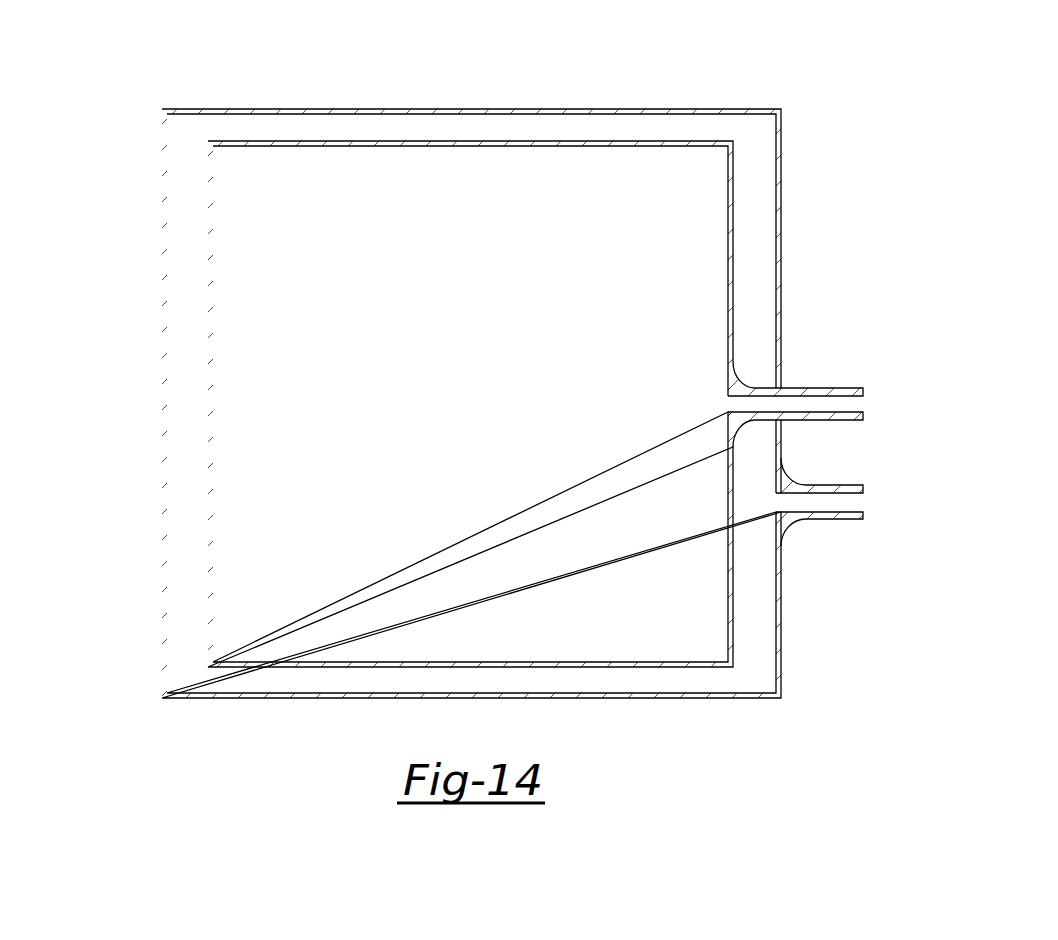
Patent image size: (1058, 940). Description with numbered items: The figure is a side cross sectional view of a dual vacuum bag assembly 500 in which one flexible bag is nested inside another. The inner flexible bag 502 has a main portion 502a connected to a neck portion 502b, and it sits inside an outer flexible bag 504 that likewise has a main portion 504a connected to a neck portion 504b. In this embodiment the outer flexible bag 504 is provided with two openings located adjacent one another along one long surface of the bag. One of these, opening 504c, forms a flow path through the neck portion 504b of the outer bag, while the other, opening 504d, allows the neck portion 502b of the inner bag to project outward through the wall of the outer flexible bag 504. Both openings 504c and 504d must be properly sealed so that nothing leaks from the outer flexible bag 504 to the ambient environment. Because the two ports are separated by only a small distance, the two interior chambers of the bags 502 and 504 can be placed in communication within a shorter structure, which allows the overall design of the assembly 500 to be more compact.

The dual vacuum bag assembly 500 is at (746, 58).
The inner flexible bag 502 is at (200, 294).
The main portion of inner flexible bag 502a is at (362, 168).
The neck portion of inner flexible bag 502b is at (836, 392).
The outer flexible bag 504 is at (155, 210).
The main portion of outer flexible bag 504a is at (631, 130).
The neck portion of outer flexible bag 504b is at (830, 515).
The opening 504c is at (775, 485).
The opening 504d is at (775, 386).